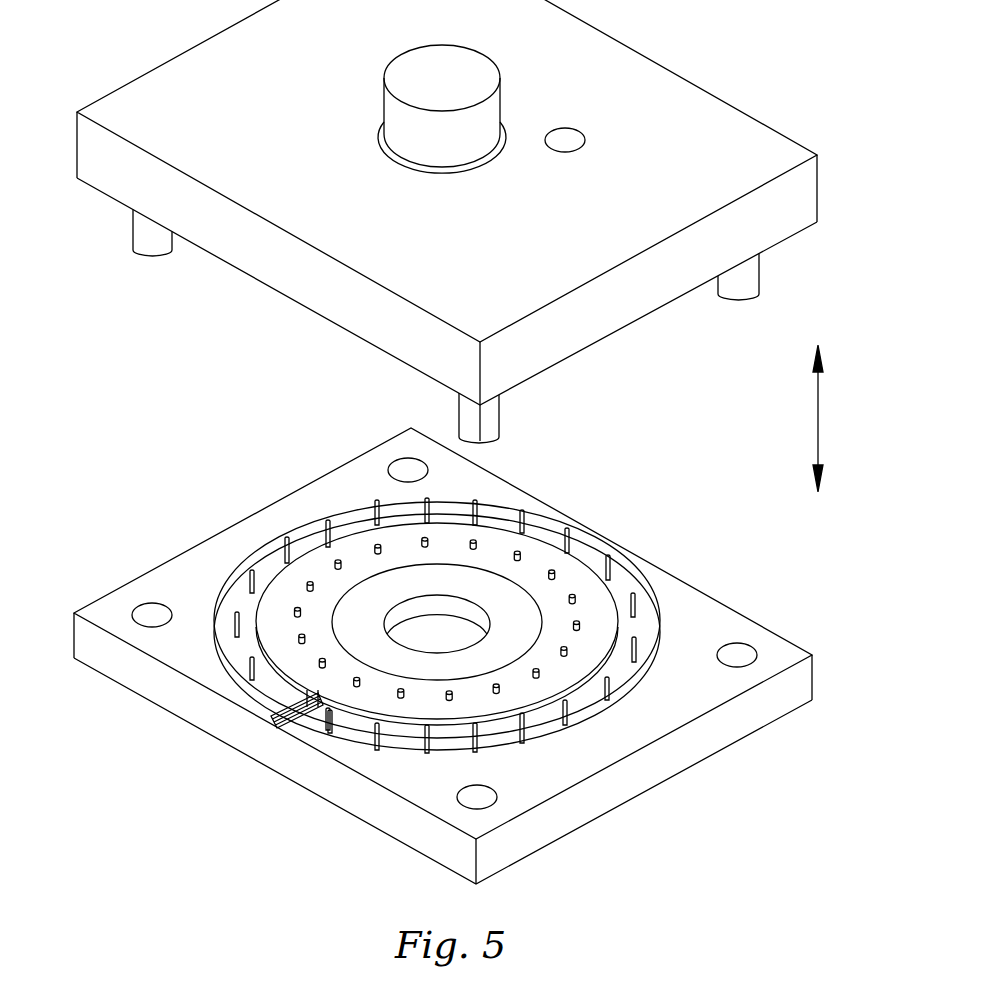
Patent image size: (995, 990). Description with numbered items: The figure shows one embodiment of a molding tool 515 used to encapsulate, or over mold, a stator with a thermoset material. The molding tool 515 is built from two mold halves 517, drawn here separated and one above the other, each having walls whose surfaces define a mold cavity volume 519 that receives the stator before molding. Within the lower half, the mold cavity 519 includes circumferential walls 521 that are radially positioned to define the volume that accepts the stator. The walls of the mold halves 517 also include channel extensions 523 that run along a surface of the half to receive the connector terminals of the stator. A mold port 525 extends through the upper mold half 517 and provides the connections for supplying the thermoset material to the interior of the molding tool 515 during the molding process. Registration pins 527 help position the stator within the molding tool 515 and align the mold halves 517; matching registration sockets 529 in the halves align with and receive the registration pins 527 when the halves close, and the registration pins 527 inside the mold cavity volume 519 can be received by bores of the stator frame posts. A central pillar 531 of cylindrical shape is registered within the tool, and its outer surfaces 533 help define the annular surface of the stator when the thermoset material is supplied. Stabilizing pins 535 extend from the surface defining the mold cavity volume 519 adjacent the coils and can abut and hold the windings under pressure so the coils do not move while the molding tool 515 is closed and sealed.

The molding tool 515 is at (722, 817).
The mold half 517 is at (770, 207).
The mold cavity volume 519 is at (273, 565).
The circumferential wall 521 is at (548, 527).
The channel extension 523 is at (262, 733).
The mold port 525 is at (566, 140).
The registration pin 527 is at (146, 240).
The registration socket 529 is at (408, 470).
The central pillar 531 is at (486, 128).
The outer surface 533 is at (384, 100).
The stabilizing pin 535 is at (311, 580).